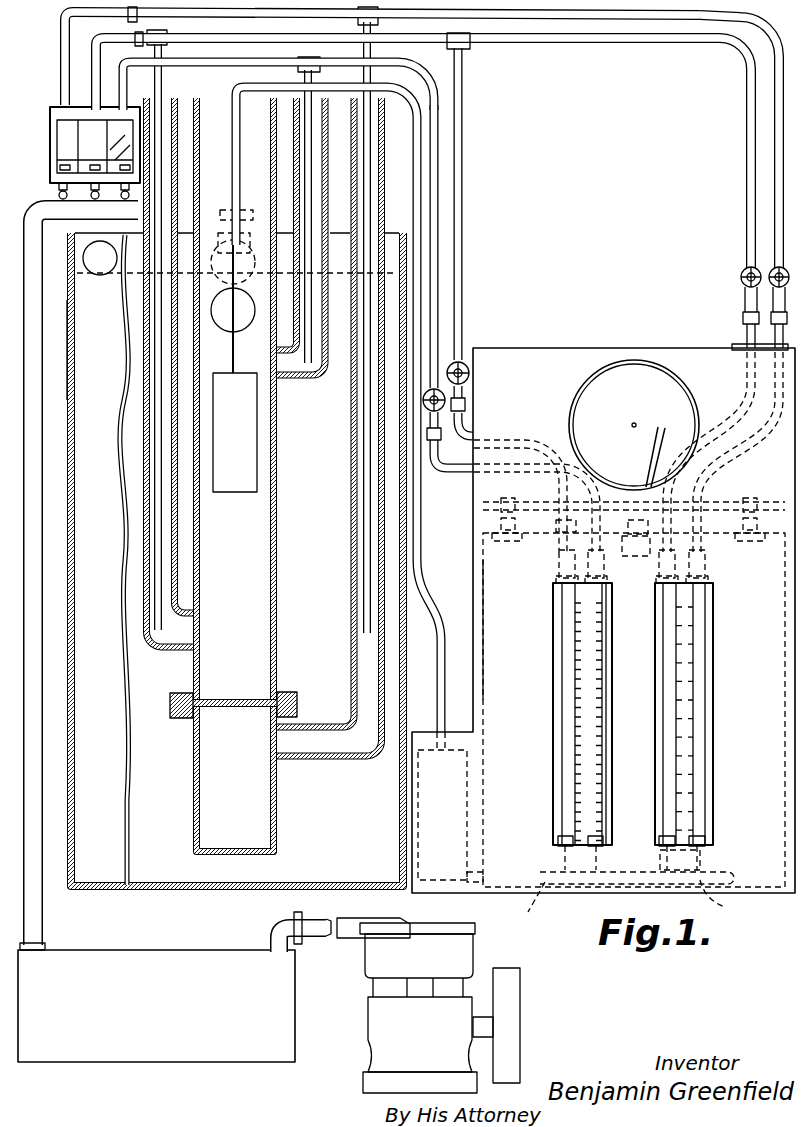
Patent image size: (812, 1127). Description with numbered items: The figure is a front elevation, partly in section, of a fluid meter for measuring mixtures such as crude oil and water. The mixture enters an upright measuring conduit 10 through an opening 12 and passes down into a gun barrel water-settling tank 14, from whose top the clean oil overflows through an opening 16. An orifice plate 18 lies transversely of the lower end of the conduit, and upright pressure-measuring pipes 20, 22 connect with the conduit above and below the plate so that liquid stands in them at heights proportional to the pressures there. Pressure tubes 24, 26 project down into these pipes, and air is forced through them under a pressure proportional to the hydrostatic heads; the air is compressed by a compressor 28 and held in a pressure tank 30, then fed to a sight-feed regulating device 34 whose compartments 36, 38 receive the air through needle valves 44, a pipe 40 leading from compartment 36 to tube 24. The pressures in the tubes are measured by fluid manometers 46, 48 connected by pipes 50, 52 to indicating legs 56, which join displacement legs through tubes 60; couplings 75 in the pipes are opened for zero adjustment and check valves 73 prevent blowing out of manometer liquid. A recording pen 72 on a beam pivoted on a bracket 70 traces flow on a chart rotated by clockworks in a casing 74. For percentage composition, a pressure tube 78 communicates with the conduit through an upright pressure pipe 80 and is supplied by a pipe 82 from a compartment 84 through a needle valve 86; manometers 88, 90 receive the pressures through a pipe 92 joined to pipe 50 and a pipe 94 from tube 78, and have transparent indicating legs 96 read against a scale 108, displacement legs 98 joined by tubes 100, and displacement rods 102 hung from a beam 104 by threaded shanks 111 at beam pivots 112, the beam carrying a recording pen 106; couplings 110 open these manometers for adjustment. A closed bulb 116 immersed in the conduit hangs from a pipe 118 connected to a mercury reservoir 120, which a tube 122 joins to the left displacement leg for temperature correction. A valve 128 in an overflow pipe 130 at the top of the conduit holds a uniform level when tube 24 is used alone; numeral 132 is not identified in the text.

The measuring conduit 10 is at (277, 428).
The opening 12 is at (62, 16).
The gun barrel water-settling tank 14 is at (75, 404).
The opening 16 is at (97, 275).
The orifice plate 18 is at (250, 700).
The pressure-measuring pipe 20 is at (178, 570).
The pressure-measuring pipe 22 is at (350, 572).
The pressure tube 24 is at (158, 505).
The pressure tube 26 is at (365, 492).
The compressor 28 is at (366, 1032).
The pressure tank 30 is at (140, 955).
The sight-feed regulating device 34 is at (52, 178).
The compartment 36 is at (90, 125).
The compartment 38 is at (57, 135).
The pipe 40 is at (94, 40).
The needle valves 44 is at (80, 205).
The fluid manometer 46 is at (650, 590).
The fluid manometer 48 is at (708, 580).
The pipe 50 is at (556, 44).
The pipe 52 is at (612, 22).
The indicating leg 56 is at (700, 686).
The tube 60 is at (618, 865).
The bracket 70 is at (628, 530).
The recording pen 72 is at (652, 455).
The check valves 73 is at (660, 860).
The casing 74 is at (688, 395).
The couplings 75 is at (772, 318).
The pressure tube 78 is at (312, 325).
The upright pressure pipe 80 is at (314, 186).
The pipe 82 is at (228, 63).
The compartment 84 is at (125, 130).
The needle valve 86 is at (108, 200).
The manometer 88 is at (607, 575).
The manometer 90 is at (486, 565).
The pipe 92 is at (463, 208).
The pipe 94 is at (437, 305).
The transparent indicating legs 96 is at (578, 698).
The displacement legs 98 is at (483, 535).
The tubes 100 is at (630, 899).
The displacement rods 102 is at (495, 536).
The beam 104 is at (557, 527).
The recording pen 106 is at (660, 452).
The scale 108 is at (590, 740).
The couplings 110 is at (442, 432).
The threaded shanks 111 is at (500, 514).
The beam pivots 112 is at (244, 262).
The closed bulb 116 is at (248, 492).
The pipe 118 is at (240, 130).
The mercury reservoir 120 is at (470, 806).
The tube 122 is at (483, 872).
The valve 128 is at (245, 226).
The pipe 130 is at (225, 290).
The tank wall 132 is at (68, 328).